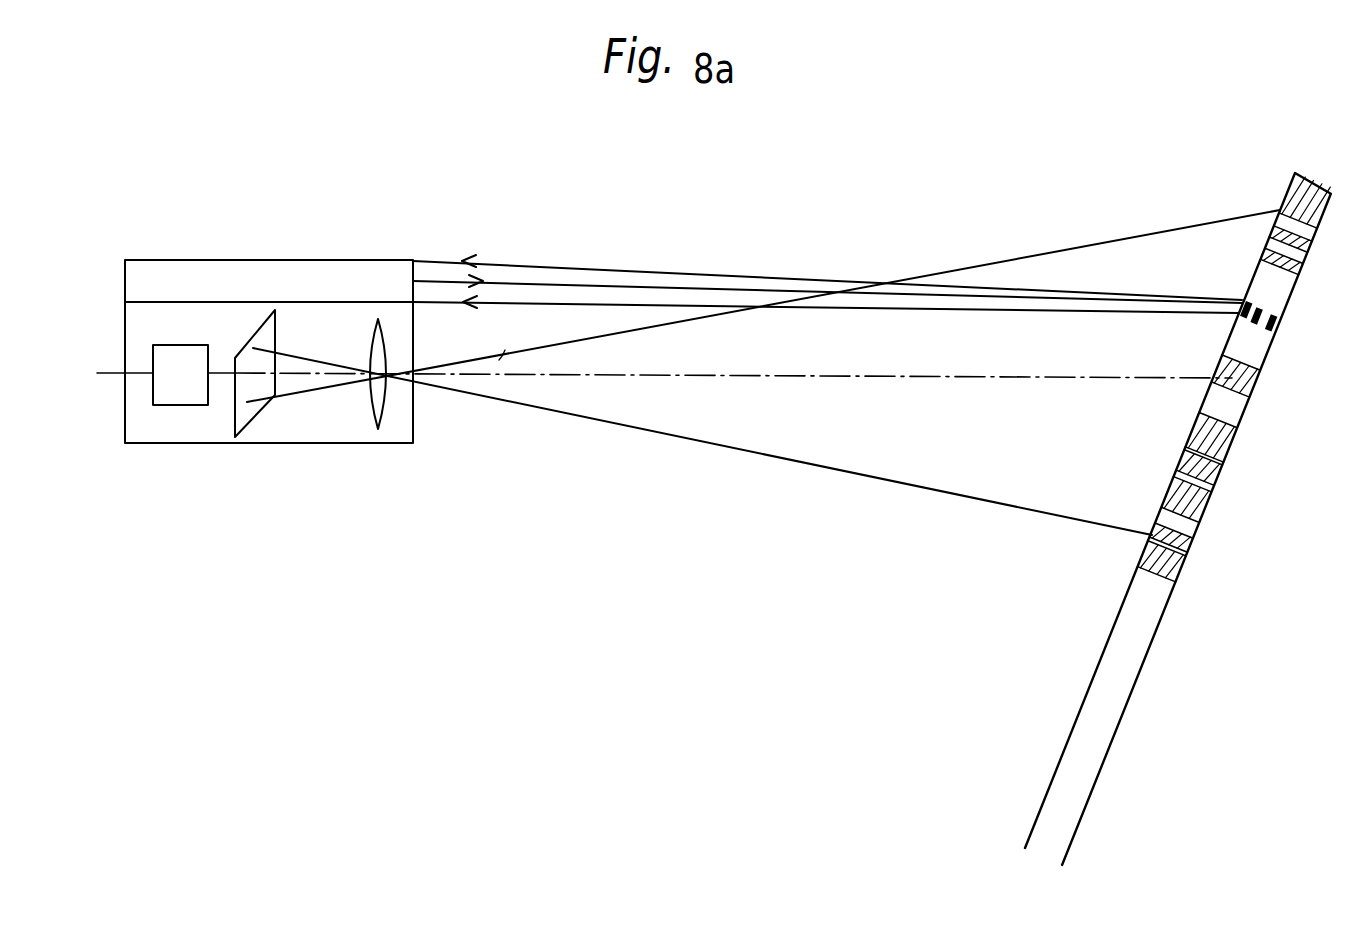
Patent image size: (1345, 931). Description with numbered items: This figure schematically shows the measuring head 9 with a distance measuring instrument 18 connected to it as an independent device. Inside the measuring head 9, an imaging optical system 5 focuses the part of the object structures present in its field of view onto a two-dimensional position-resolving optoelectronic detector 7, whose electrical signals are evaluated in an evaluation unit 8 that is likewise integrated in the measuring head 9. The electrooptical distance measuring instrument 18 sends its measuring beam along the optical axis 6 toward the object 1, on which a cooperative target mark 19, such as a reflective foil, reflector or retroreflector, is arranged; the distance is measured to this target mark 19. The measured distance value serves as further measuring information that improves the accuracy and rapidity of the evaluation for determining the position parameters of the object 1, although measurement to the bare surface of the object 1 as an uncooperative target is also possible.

The object 1 is at (1114, 704).
The imaging optical system 5 is at (372, 340).
The optical axis 6 is at (665, 376).
The two-dimensional position-resolving optoelectronic detector 7 is at (263, 328).
The evaluation unit 8 is at (172, 386).
The measuring head 9 is at (162, 445).
The distance measuring instrument 18 is at (221, 275).
The cooperative target mark 19 is at (1245, 328).